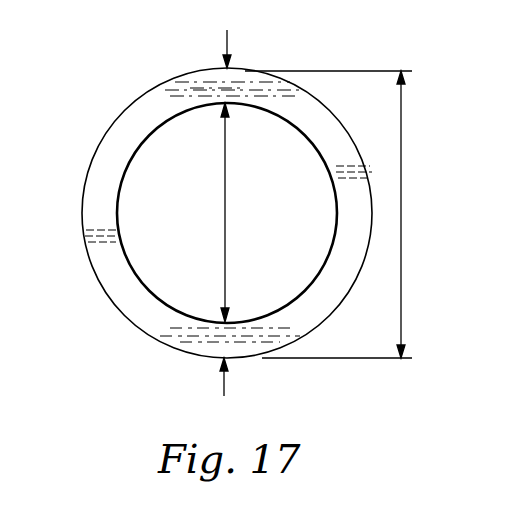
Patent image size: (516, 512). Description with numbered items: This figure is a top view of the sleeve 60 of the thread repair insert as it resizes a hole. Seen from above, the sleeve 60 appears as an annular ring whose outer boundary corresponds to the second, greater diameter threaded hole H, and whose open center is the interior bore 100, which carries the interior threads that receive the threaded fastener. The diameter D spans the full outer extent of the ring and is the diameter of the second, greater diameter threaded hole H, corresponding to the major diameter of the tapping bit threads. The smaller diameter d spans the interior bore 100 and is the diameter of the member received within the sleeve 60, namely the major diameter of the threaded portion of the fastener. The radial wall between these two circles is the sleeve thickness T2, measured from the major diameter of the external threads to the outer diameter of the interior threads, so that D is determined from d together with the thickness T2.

The sleeve 60 is at (120, 138).
The interior bore 100 is at (140, 194).
The diameter of the second, greater diameter threaded hole D is at (401, 222).
The diameter of a member received within the sleeve d is at (225, 212).
The thickness of the sleeve T2 is at (218, 80).
The second, greater diameter threaded hole H is at (305, 82).